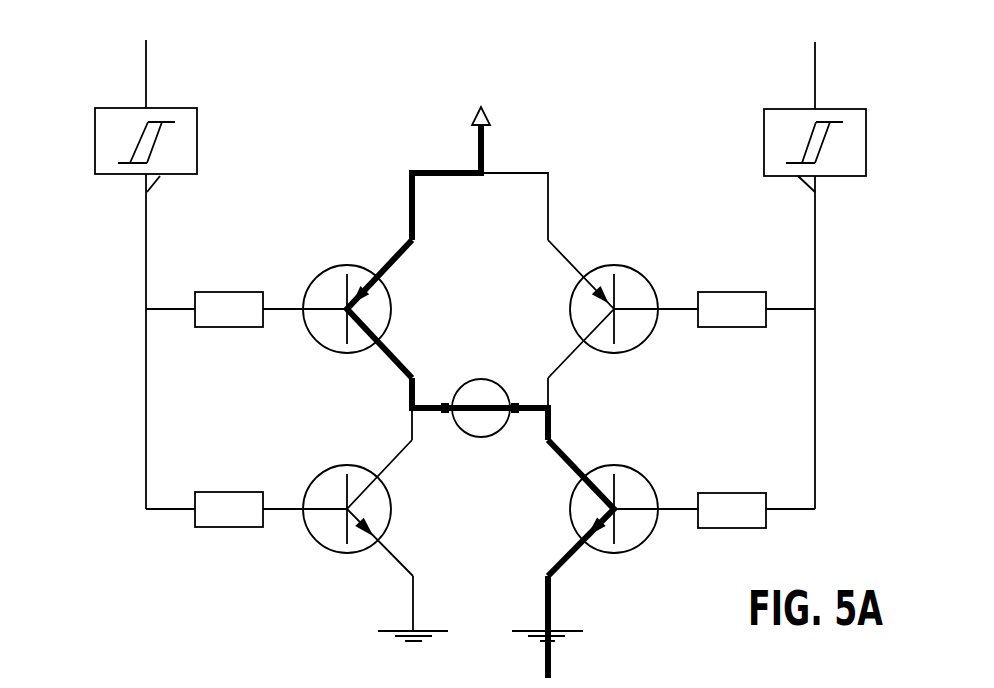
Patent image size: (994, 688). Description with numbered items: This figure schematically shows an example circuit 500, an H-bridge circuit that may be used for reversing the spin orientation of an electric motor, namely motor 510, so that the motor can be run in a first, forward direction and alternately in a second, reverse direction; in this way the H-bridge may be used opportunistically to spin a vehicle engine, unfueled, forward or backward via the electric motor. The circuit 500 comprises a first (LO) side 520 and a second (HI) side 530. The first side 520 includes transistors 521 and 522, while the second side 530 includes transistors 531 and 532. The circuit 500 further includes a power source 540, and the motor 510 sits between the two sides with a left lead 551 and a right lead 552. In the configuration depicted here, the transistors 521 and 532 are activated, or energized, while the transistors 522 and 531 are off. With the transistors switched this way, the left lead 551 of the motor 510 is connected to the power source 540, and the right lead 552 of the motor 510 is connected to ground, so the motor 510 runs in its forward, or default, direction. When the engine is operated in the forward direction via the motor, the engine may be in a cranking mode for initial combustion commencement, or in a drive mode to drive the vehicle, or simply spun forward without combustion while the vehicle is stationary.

The circuit 500 is at (303, 78).
The motor 510 is at (497, 355).
The first (LO) side 520 is at (85, 83).
The transistor 521 is at (335, 265).
The transistor 522 is at (333, 466).
The second (HI) side 530 is at (867, 85).
The transistor 531 is at (630, 266).
The transistor 532 is at (637, 467).
The power source 540 is at (487, 112).
The left lead 551 is at (445, 412).
The right lead 552 is at (515, 412).